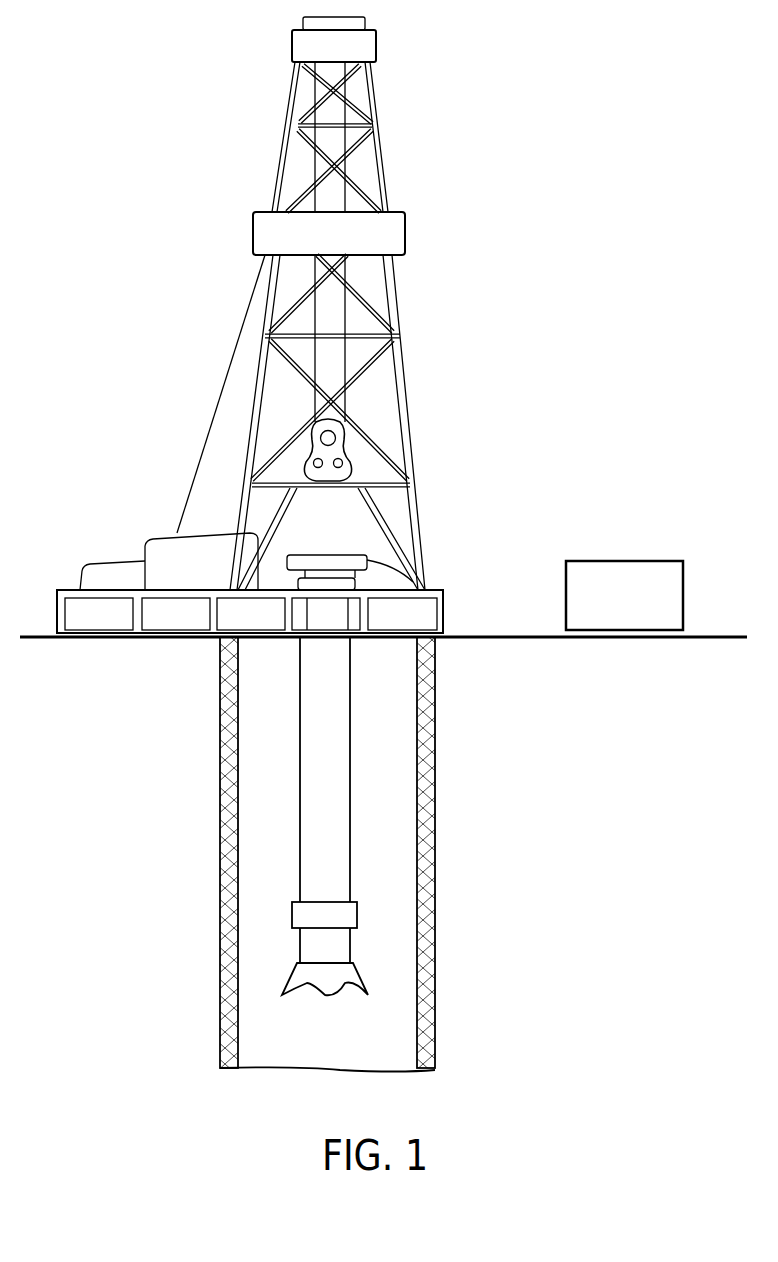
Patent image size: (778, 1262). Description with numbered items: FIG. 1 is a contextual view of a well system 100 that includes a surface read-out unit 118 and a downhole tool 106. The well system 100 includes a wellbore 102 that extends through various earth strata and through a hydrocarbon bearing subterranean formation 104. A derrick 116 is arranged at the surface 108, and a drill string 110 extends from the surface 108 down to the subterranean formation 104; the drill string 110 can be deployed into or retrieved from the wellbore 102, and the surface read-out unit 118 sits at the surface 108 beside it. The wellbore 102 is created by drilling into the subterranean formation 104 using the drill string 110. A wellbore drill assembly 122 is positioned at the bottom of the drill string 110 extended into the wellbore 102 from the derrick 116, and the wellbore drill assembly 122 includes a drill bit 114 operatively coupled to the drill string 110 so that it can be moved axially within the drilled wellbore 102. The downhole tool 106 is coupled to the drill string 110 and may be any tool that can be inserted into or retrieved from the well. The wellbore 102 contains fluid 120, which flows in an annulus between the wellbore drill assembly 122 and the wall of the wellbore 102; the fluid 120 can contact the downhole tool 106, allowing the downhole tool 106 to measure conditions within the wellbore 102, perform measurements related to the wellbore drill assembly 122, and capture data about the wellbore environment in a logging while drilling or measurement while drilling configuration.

The well system 100 is at (517, 363).
The wellbore 102 is at (417, 827).
The subterranean formation 104 is at (437, 938).
The downhole tool 106 is at (357, 918).
The surface 108 is at (503, 637).
The drill string 110 is at (317, 697).
The drill bit 114 is at (297, 968).
The derrick 116 is at (443, 592).
The surface read-out unit 118 is at (624, 595).
The fluid 120 is at (373, 1033).
The wellbore drill assembly 122 is at (350, 775).